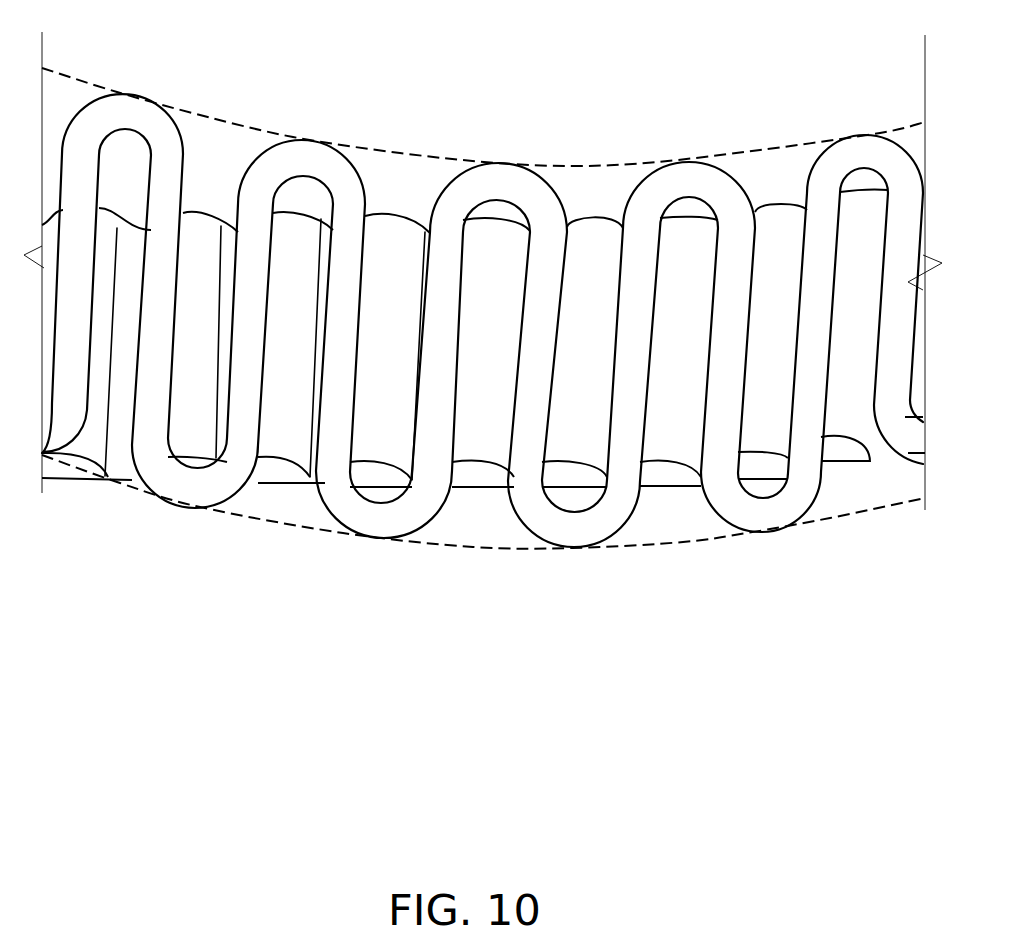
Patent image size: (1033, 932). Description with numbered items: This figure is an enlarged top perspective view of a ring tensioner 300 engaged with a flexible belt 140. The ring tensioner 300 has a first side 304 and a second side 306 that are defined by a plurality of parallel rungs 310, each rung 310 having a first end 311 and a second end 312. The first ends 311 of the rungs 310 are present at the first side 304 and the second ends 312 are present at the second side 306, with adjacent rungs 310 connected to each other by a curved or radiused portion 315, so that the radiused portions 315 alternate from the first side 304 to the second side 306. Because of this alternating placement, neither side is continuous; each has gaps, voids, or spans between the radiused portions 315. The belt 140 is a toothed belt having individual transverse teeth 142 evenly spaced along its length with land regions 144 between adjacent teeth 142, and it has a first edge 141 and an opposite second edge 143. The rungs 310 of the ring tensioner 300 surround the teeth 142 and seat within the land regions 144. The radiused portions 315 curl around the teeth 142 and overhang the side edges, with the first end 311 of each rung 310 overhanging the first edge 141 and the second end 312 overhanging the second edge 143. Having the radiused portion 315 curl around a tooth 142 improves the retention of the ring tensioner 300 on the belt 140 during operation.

The ring tensioner 300 is at (482, 331).
The flexible belt 140 is at (483, 305).
The radiused portion 315 is at (497, 163).
The second side 306 is at (656, 162).
The second end 312 is at (628, 214).
The transverse tooth 142 is at (772, 203).
The second edge 143 is at (791, 203).
The land region 144 is at (117, 480).
The rung 310 is at (516, 418).
The first end 311 is at (642, 520).
The first side 304 is at (531, 551).
The first edge 141 is at (843, 468).